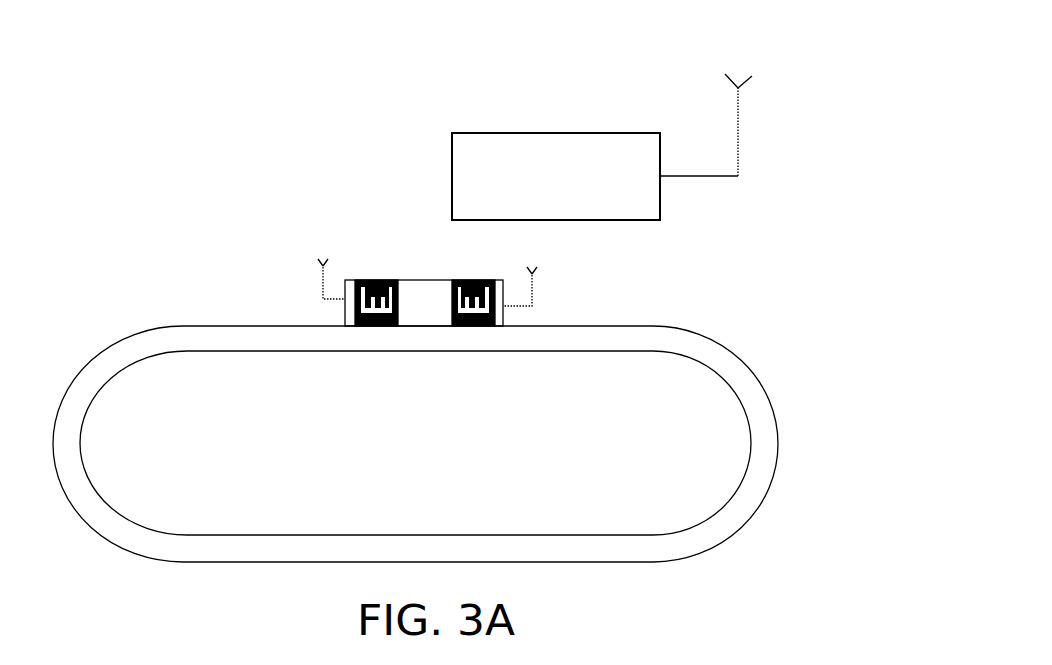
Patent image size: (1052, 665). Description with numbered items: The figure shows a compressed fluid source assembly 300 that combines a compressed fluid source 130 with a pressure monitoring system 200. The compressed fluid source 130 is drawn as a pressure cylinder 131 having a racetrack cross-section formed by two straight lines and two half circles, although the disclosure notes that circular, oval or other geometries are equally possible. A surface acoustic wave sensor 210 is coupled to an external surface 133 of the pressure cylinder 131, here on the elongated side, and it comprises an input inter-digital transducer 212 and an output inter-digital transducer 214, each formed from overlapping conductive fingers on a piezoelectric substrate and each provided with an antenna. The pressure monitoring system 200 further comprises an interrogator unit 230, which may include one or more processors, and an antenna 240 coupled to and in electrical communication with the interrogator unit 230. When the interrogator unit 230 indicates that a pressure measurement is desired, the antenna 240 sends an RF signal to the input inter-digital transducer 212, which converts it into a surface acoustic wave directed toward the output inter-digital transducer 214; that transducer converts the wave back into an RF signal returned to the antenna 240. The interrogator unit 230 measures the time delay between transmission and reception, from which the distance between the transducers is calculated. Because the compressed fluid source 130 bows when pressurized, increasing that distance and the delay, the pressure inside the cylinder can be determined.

The compressed fluid source assembly 300 is at (78, 234).
The pressure monitoring system 200 is at (275, 232).
The surface acoustic wave sensor 210 is at (425, 288).
The input inter-digital transducer 212 is at (345, 316).
The output inter-digital transducer 214 is at (503, 313).
The interrogator unit 230 is at (556, 176).
The antenna 240 is at (750, 81).
The compressed fluid source 130 is at (203, 337).
The pressure cylinder 131 is at (103, 378).
The external surface 133 is at (245, 326).